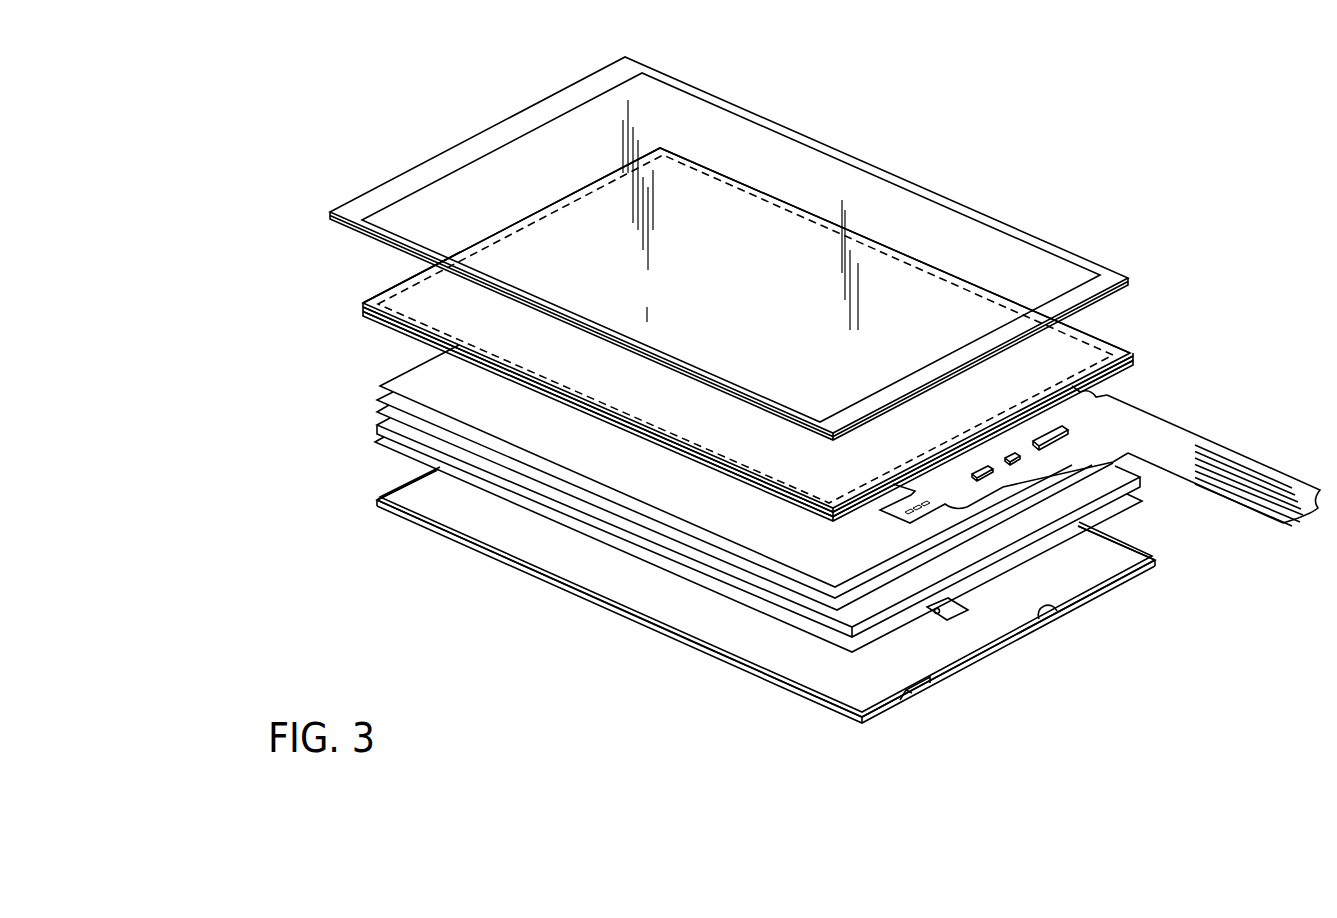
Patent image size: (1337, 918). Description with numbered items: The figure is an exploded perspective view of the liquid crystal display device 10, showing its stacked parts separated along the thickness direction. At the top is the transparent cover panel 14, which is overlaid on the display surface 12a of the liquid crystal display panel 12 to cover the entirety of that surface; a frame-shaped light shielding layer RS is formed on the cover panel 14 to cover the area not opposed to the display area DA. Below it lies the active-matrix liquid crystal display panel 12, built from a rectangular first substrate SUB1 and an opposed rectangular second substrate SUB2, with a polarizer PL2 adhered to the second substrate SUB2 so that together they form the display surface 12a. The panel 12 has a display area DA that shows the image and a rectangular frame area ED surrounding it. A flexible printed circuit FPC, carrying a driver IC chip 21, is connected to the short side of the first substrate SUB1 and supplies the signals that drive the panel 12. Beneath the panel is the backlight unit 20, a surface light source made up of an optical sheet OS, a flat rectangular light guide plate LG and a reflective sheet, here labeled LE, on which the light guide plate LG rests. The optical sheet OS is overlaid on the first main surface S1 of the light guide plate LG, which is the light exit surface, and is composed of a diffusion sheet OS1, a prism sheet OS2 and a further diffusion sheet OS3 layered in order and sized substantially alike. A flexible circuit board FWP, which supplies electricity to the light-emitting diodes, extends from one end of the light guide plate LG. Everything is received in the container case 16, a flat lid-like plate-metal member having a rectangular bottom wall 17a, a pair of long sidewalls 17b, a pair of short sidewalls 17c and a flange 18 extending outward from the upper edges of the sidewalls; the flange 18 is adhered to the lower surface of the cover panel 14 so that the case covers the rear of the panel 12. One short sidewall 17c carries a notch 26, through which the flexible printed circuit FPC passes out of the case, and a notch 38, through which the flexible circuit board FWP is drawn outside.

The liquid crystal display device 10 is at (1032, 158).
The cover panel 14 is at (672, 98).
The light shielding layer RS is at (453, 156).
The liquid crystal display panel 12 is at (811, 337).
The display surface 12a is at (447, 302).
The frame area ED is at (383, 289).
The display area DA is at (415, 316).
The polarizer PL2 is at (1117, 347).
The second substrate SUB2 is at (1133, 353).
The first substrate SUB1 is at (1133, 364).
The driver IC chip 21 is at (1060, 438).
The flexible printed circuit FPC is at (1250, 462).
The optical sheet OS is at (672, 477).
The diffusion sheet OS3 is at (380, 380).
The prism sheet OS2 is at (377, 400).
The diffusion sheet OS1 is at (377, 412).
The light guide plate LG is at (377, 427).
The reflective sheet LE is at (375, 444).
The backlight unit 20 is at (713, 537).
The first main surface S1 is at (783, 598).
The container case 16 is at (766, 621).
The bottom wall 17a is at (813, 668).
The long sidewall 17b is at (748, 668).
The short sidewall 17c is at (423, 488).
The flange 18 is at (400, 487).
The notch 26 is at (1050, 617).
The notch 38 is at (923, 692).
The flexible circuit board FWP is at (928, 618).